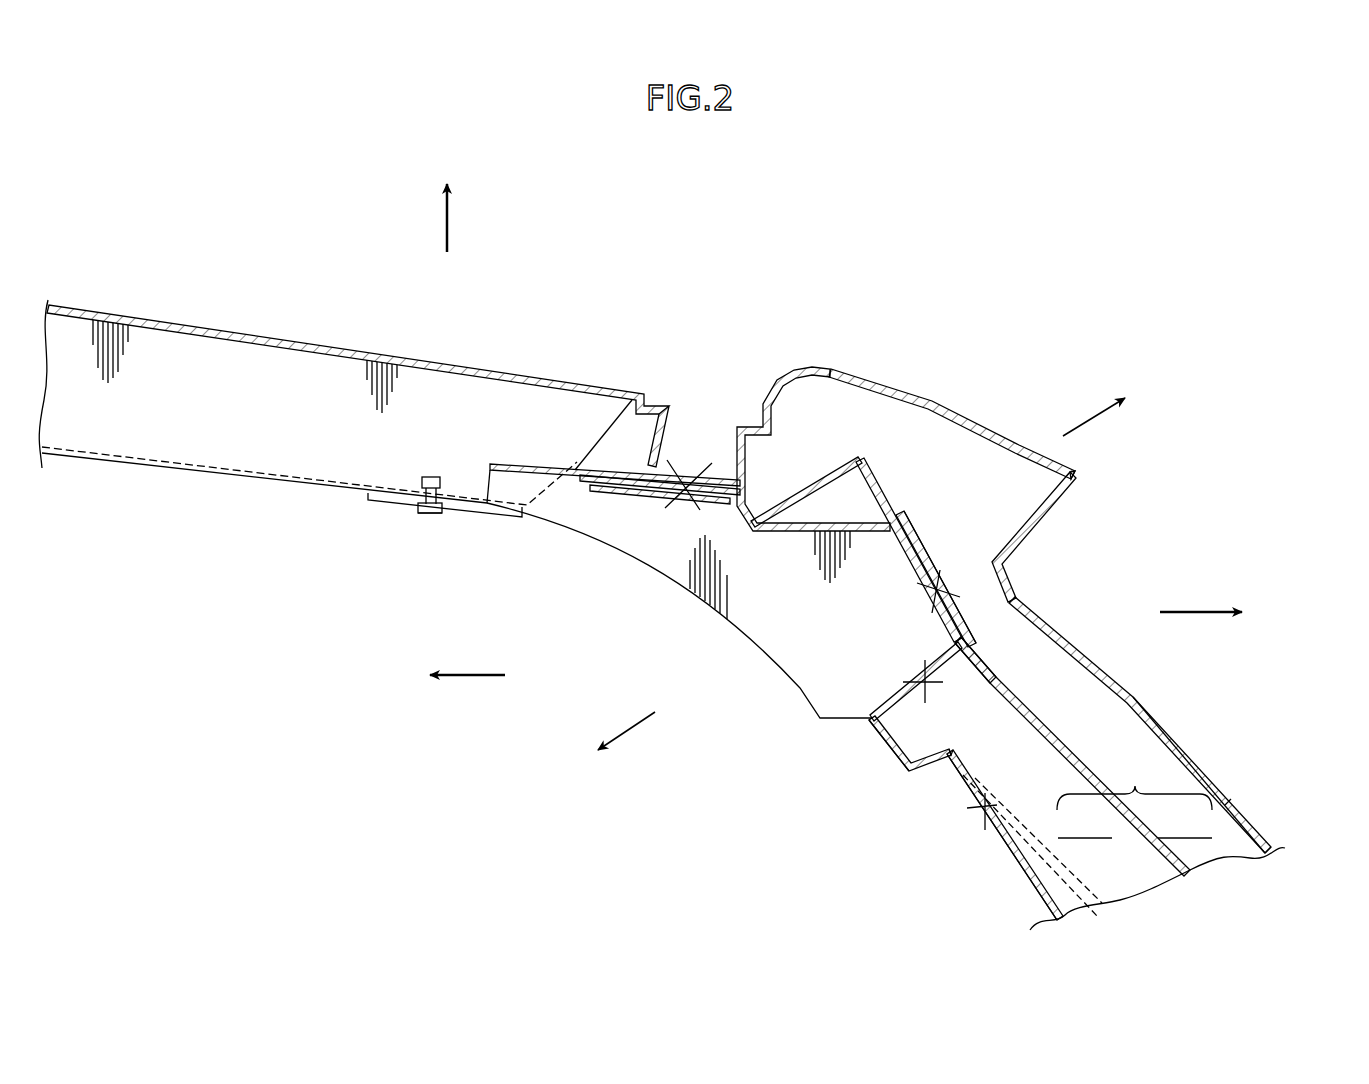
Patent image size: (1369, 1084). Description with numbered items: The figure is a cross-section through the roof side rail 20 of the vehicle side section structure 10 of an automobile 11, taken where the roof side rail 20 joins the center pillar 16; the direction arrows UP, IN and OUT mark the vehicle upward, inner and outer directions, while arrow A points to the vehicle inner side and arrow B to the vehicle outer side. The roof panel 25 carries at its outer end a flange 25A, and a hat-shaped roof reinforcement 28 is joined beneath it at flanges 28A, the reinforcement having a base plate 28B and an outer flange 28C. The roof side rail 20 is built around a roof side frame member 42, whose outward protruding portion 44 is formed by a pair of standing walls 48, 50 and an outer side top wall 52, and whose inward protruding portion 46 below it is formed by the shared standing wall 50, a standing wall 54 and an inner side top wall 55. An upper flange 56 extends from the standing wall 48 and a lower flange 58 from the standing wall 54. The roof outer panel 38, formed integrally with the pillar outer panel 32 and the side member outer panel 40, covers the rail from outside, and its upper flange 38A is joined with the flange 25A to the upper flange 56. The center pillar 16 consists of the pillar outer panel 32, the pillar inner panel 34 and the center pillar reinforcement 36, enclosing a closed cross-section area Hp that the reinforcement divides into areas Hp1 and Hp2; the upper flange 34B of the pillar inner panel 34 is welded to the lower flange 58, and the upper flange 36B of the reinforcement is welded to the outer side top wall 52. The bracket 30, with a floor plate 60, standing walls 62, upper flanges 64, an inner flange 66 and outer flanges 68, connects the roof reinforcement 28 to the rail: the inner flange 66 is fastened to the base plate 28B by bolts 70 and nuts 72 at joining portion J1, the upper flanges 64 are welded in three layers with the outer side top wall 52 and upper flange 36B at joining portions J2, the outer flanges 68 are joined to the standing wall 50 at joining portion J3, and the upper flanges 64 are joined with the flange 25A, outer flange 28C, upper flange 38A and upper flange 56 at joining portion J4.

The vehicle side section structure 10 is at (853, 838).
The automobile 11 is at (1282, 688).
The center pillar 16 is at (1238, 778).
The roof side rail 20 is at (1090, 471).
The roof panel 25 is at (292, 340).
The flange 25A is at (721, 478).
The roof reinforcement 28 is at (177, 474).
The flanges 28A is at (503, 368).
The base plate 28B is at (320, 486).
The outer flange 28C is at (650, 418).
The bracket 30 is at (768, 657).
The pillar outer panel 32 is at (1148, 710).
The pillar inner panel 34 is at (1045, 908).
The upper flange 34B is at (967, 800).
The center pillar reinforcement 36 is at (1190, 878).
The upper flange 36B is at (912, 527).
The roof outer panel 38 is at (946, 402).
The upper flange 38A is at (682, 456).
The side member outer panel 40 is at (1087, 652).
The roof side frame member 42 is at (797, 509).
The outward protruding portion 44 is at (873, 466).
The inward protruding portion 46 is at (905, 780).
The standing wall 48 is at (838, 468).
The standing wall 50 is at (950, 665).
The outer side top wall 52 is at (895, 505).
The standing wall 54 is at (955, 770).
The inner side top wall 55 is at (892, 755).
The upper flange 56 is at (622, 490).
The lower flange 58 is at (1015, 856).
The floor plate 60 is at (515, 515).
The standing walls 62 is at (727, 583).
The upper flanges 64 is at (580, 486).
The inner flange 66 is at (388, 512).
The outer flanges 68 is at (870, 722).
The bolts 70 is at (432, 515).
The nuts 72 is at (428, 477).
The joining portion J1 is at (452, 540).
The joining portions J2 is at (908, 610).
The joining portion J3 is at (928, 695).
The joining portion J4 is at (676, 520).
The closed cross-section area Hp is at (1134, 782).
The closed cross-section area Hp1 is at (1085, 822).
The closed cross-section area Hp2 is at (1185, 822).
The upward direction UP is at (447, 198).
The inward direction IN is at (447, 676).
The outward direction OUT is at (1232, 613).
The arrow A is at (626, 724).
The arrow B is at (1094, 409).